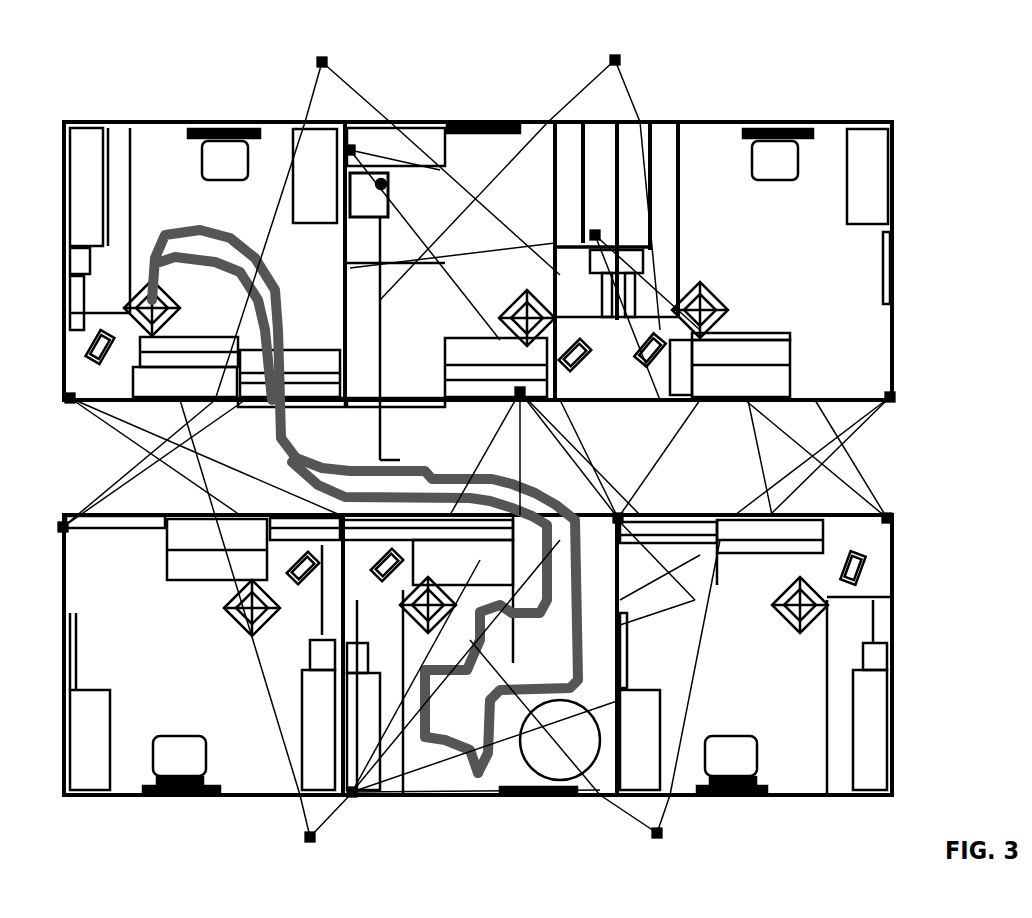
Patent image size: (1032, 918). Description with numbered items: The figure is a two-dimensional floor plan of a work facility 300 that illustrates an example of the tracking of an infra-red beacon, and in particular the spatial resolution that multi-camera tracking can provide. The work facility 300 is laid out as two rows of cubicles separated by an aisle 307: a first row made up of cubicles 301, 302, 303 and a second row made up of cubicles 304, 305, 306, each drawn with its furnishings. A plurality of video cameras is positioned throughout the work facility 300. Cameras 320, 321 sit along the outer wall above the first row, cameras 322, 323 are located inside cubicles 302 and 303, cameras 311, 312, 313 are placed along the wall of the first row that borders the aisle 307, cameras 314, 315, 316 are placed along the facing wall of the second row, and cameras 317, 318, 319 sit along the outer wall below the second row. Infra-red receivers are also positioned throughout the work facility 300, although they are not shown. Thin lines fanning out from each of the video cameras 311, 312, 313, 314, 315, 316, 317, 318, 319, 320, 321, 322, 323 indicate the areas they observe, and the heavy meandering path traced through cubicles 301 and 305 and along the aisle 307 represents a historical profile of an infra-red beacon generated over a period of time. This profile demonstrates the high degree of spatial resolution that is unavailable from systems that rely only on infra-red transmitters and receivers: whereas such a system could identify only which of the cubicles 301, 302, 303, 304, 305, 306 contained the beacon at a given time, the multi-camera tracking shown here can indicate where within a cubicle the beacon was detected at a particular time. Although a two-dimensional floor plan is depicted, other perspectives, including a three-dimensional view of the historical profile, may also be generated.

The work facility 300 is at (948, 128).
The cubicle 301 is at (160, 130).
The cubicle 302 is at (503, 126).
The cubicle 303 is at (828, 166).
The cubicle 304 is at (243, 790).
The cubicle 305 is at (592, 790).
The cubicle 306 is at (800, 790).
The aisle 307 is at (878, 466).
The video camera 311 is at (68, 405).
The video camera 312 is at (530, 400).
The video camera 313 is at (896, 397).
The video camera 314 is at (60, 522).
The video camera 315 is at (622, 512).
The video camera 316 is at (894, 518).
The video camera 317 is at (316, 844).
The video camera 318 is at (360, 798).
The video camera 319 is at (662, 840).
The video camera 320 is at (322, 56).
The video camera 321 is at (622, 54).
The video camera 322 is at (356, 146).
The video camera 323 is at (603, 232).